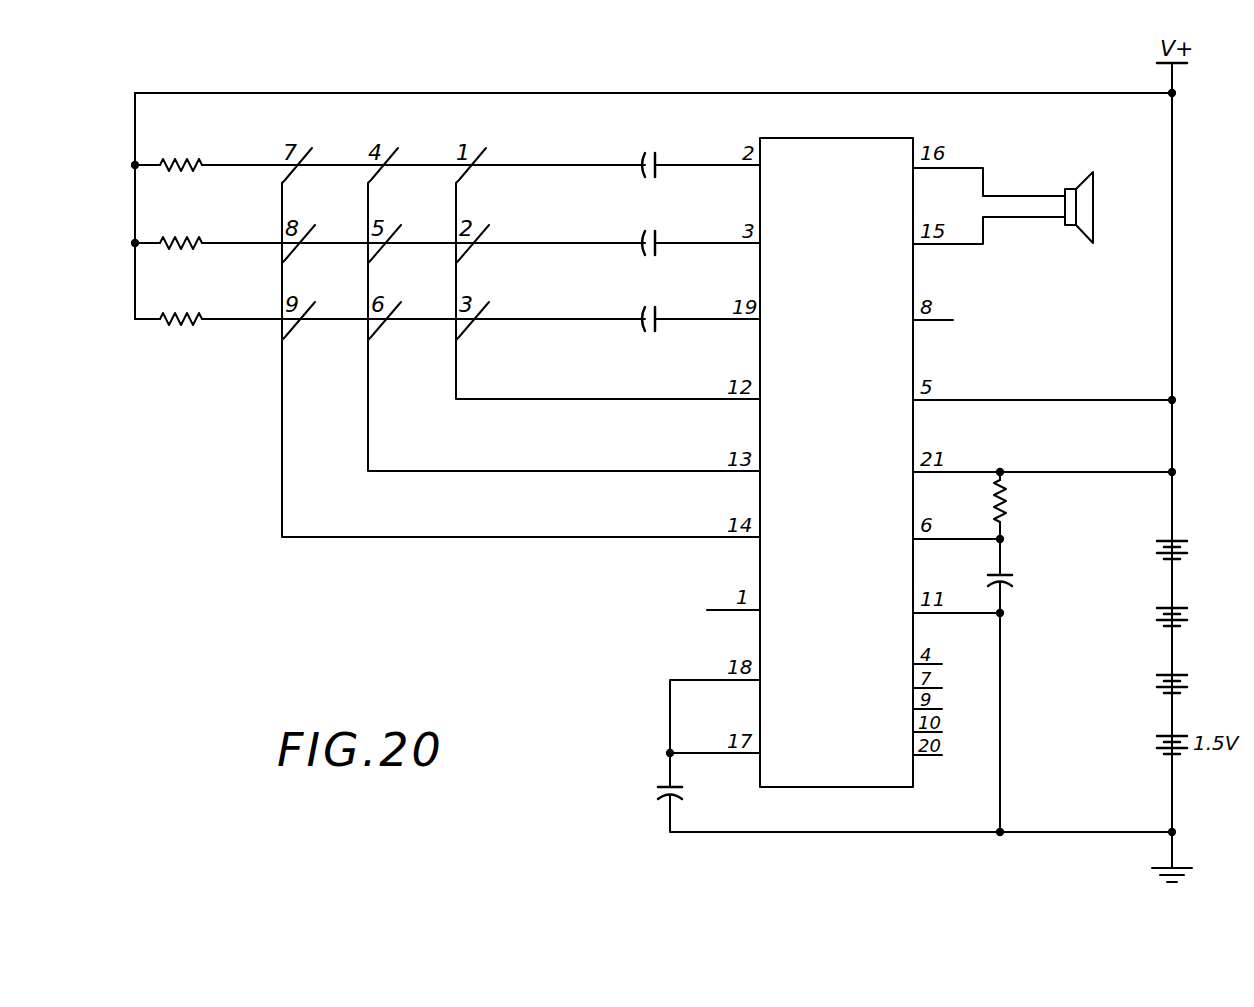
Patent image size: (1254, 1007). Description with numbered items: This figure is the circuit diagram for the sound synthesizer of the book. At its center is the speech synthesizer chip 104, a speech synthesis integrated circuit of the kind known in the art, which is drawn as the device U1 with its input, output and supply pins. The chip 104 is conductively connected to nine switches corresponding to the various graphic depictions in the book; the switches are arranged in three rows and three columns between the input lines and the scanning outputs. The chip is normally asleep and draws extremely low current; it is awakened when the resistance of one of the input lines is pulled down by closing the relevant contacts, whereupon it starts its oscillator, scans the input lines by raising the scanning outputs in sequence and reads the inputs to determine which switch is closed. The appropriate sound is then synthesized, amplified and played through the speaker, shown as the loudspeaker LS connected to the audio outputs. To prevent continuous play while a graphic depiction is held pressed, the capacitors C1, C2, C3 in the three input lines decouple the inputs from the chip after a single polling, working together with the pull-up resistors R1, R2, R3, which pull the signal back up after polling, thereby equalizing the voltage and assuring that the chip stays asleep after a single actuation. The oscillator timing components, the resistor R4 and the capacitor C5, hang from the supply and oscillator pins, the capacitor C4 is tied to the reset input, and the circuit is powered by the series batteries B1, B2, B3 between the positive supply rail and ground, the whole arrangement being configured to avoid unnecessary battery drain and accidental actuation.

The pull-up resistor R1 is at (181, 167).
The pull-up resistor R2 is at (179, 243).
The pull-up resistor R3 is at (177, 319).
The resistor 2.7K 1% R4 is at (1025, 501).
The decoupling capacitor C1 is at (641, 162).
The decoupling capacitor C2 is at (639, 240).
The decoupling capacitor C3 is at (641, 318).
The capacitor .047uf C4 is at (673, 800).
The capacitor 100pf 2% C5 is at (1032, 579).
The integrated circuit ES3116 U1 is at (836, 459).
The loudspeaker LS is at (1018, 206).
The battery 1.5V B1 is at (1184, 537).
The battery 1.5V B2 is at (1184, 603).
The battery 1.5V B3 is at (1184, 671).
The speech synthesizer chip 104 is at (760, 638).